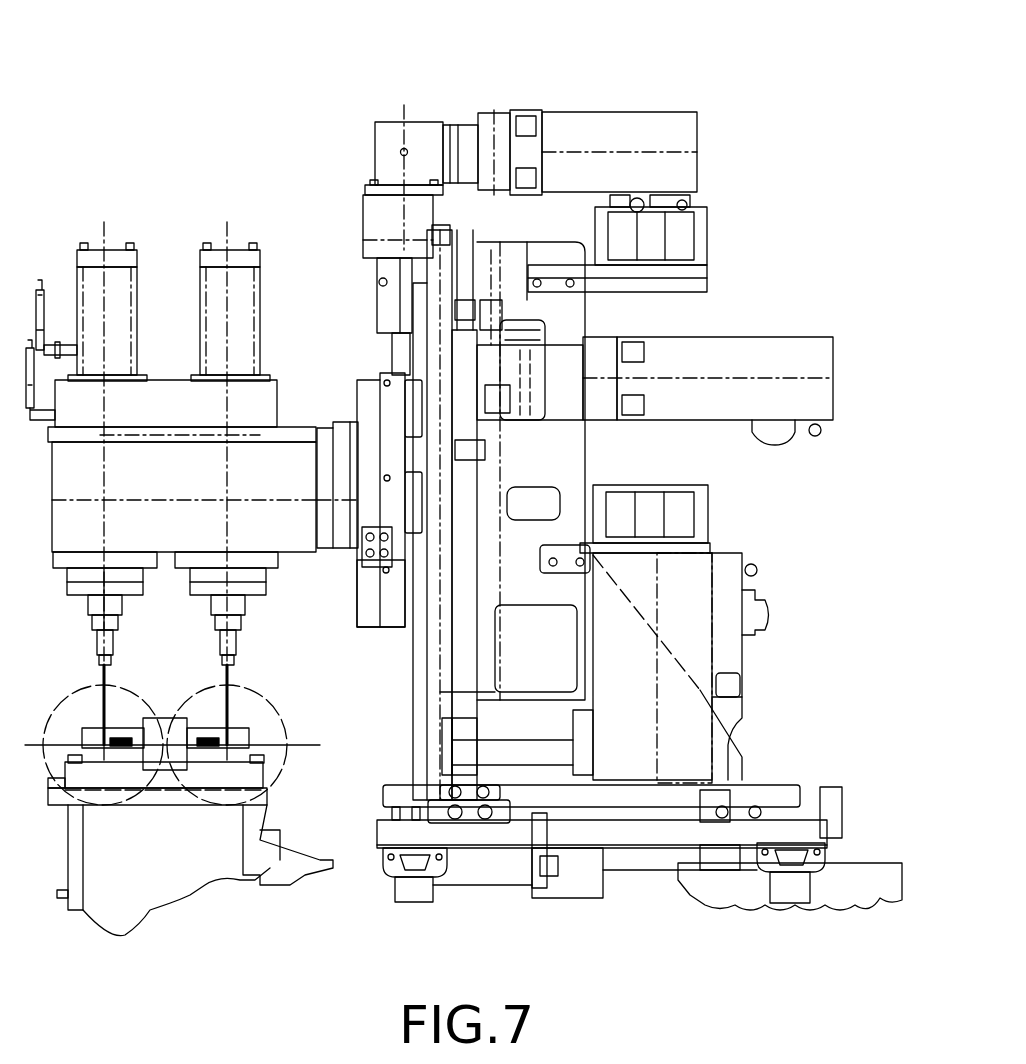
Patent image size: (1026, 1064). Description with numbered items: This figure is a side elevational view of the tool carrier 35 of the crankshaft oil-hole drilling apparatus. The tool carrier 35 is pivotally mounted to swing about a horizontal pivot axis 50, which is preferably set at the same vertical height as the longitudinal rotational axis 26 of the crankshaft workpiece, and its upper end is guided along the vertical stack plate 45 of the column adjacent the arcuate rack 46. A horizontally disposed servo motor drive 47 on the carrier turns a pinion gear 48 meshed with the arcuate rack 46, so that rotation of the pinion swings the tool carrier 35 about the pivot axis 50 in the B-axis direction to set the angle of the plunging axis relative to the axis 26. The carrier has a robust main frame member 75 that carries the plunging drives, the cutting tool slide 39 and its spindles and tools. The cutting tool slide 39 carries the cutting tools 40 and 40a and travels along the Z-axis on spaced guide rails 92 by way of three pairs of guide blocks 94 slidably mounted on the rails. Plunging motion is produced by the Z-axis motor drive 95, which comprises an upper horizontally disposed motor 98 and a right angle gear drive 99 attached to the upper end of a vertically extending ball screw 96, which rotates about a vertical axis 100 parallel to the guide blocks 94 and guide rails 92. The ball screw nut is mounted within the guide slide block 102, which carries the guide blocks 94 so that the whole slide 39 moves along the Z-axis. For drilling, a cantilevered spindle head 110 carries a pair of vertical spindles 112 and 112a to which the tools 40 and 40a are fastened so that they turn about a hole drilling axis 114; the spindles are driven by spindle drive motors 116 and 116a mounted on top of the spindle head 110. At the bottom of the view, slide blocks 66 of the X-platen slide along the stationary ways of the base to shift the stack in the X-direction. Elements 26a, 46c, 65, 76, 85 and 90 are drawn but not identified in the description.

The longitudinal axis 26 is at (235, 790).
The clamp support bracket 26a is at (95, 805).
The tool carrier 35 is at (397, 660).
The cutting tool slide 39 is at (362, 368).
The cutting tool 40 is at (232, 693).
The cutting tool 40a is at (108, 693).
The vertical stack plate 45 is at (477, 470).
The arcuate rack 46 is at (530, 312).
The bracket fastener 46c is at (505, 325).
The motor drive 47 is at (763, 345).
The pinion gear 48 is at (525, 345).
The pivot axis 50 is at (440, 760).
The linear rail 65 is at (788, 835).
The slide blocks 66 is at (822, 843).
The main frame member 75 is at (445, 672).
The guide member 76 is at (555, 745).
The coupling 85 is at (530, 347).
The support column 90 is at (390, 640).
The guide rails 92 is at (410, 450).
The guide blocks 94 is at (412, 410).
The Z-axis motor drive 95 is at (585, 108).
The ball screw 96 is at (386, 350).
The motor 98 is at (668, 120).
The right angle gear drive 99 is at (393, 128).
The vertical axis 100 is at (395, 238).
The guide slide block 102 is at (360, 420).
The spindle head 110 is at (50, 537).
The spindle 112 is at (118, 565).
The spindle 112a is at (235, 600).
The hole drilling axis 114 is at (105, 525).
The spindle drive motor 116 is at (205, 285).
The spindle drive motor 116a is at (93, 292).